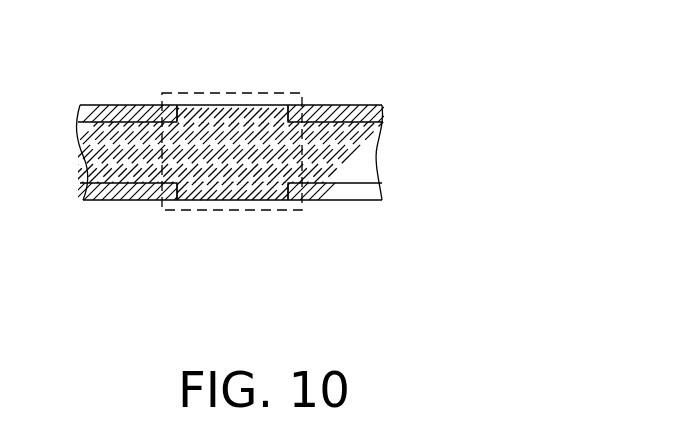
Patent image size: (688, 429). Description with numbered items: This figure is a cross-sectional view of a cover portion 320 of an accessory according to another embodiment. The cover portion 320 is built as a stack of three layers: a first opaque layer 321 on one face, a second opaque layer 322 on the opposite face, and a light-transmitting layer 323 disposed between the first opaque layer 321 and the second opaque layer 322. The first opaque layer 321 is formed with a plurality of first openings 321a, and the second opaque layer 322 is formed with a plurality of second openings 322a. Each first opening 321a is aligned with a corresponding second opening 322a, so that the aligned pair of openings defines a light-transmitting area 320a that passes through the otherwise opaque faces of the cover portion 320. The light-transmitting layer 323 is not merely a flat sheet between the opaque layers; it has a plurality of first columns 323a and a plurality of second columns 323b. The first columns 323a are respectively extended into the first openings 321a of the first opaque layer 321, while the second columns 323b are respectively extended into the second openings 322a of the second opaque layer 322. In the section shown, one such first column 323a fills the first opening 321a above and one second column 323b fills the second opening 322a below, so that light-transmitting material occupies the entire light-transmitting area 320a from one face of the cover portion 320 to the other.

The cover portion 320 is at (472, 85).
The first opaque layer 321 is at (380, 120).
The second opaque layer 322 is at (380, 192).
The light-transmitting layer 323 is at (375, 152).
The light-transmitting area 320a is at (233, 91).
The first opening 321a is at (180, 113).
The second opening 322a is at (180, 190).
The first column 323a is at (274, 115).
The second column 323b is at (268, 190).